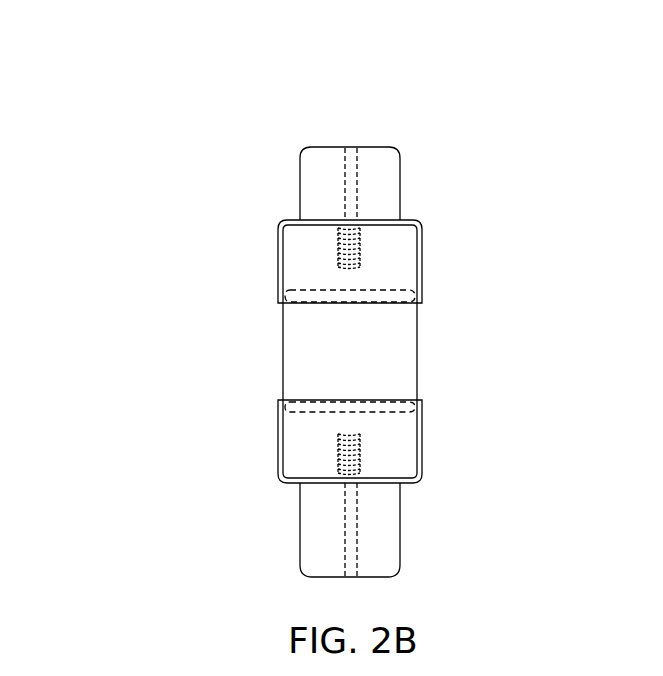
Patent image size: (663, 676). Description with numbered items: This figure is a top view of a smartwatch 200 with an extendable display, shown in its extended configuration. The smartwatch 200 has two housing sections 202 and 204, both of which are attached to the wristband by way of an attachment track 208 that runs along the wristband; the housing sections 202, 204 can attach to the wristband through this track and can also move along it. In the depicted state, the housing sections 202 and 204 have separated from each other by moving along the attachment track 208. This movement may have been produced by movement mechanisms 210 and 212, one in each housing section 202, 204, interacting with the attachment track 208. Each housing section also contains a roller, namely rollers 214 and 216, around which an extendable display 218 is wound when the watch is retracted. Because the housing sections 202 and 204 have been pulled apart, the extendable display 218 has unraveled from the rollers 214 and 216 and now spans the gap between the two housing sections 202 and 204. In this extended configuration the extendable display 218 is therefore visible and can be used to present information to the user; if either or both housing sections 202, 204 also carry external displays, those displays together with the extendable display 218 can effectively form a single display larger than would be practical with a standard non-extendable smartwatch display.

The smartwatch 200 is at (158, 141).
The housing section 202 is at (403, 238).
The housing section 204 is at (410, 465).
The attachment track 208 is at (353, 163).
The movement mechanism 210 is at (340, 240).
The movement mechanism 212 is at (343, 451).
The roller 214 is at (297, 298).
The roller 216 is at (413, 402).
The extendable display 218 is at (408, 330).